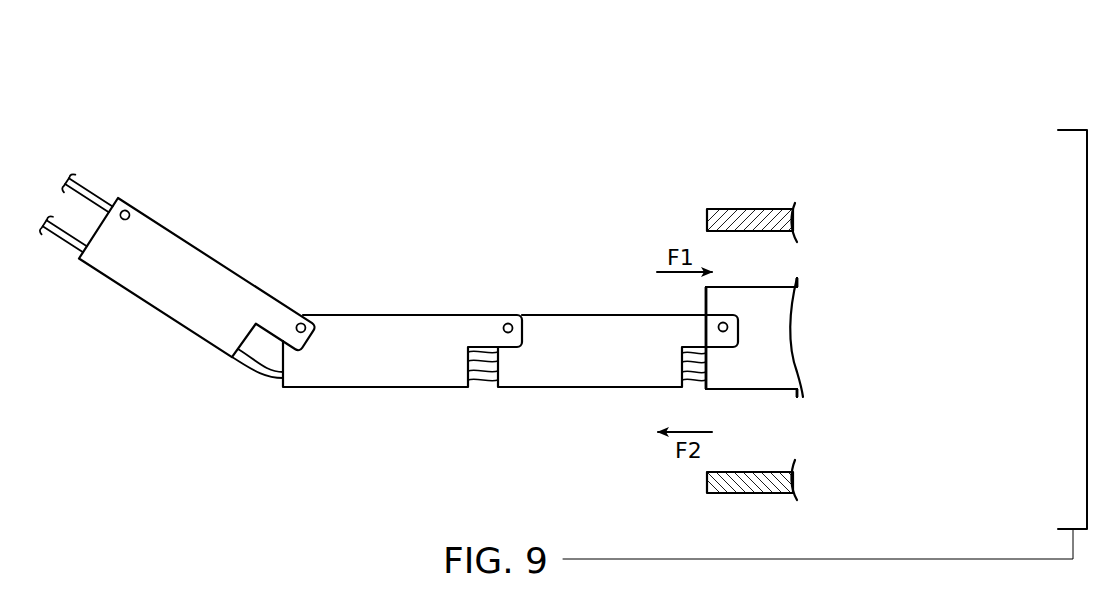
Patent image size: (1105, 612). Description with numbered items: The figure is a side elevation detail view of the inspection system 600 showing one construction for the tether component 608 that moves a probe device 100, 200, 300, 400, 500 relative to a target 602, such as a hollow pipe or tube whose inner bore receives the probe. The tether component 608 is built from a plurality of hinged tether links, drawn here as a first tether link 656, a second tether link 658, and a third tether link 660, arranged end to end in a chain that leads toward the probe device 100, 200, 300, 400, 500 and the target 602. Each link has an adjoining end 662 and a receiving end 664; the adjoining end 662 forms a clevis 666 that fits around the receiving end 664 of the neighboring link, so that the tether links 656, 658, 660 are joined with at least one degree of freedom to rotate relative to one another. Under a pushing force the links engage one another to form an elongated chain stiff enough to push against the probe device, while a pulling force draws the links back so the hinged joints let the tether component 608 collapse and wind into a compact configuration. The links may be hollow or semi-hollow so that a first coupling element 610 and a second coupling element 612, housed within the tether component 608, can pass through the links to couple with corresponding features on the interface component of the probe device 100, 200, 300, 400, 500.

The inspection system 600 is at (826, 50).
The tether component 608 is at (633, 156).
The third tether link 660 is at (186, 266).
The receiving end 664 is at (297, 300).
The second tether link 658 is at (402, 345).
The adjoining end 662 is at (520, 302).
The clevis 666 is at (523, 267).
The first coupling element 610 is at (475, 362).
The second coupling element 612 is at (482, 377).
The first tether link 656 is at (608, 327).
The target 602 is at (748, 208).
The probe device 100 is at (781, 270).
The probe device 200 is at (751, 337).
The probe device 300 is at (751, 337).
The probe device 400 is at (751, 337).
The probe device 500 is at (751, 337).